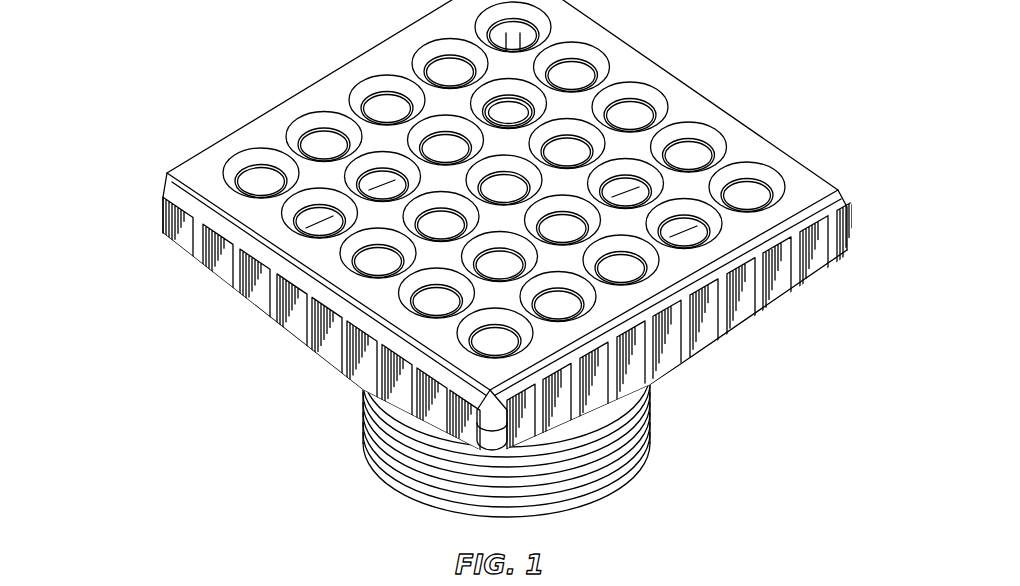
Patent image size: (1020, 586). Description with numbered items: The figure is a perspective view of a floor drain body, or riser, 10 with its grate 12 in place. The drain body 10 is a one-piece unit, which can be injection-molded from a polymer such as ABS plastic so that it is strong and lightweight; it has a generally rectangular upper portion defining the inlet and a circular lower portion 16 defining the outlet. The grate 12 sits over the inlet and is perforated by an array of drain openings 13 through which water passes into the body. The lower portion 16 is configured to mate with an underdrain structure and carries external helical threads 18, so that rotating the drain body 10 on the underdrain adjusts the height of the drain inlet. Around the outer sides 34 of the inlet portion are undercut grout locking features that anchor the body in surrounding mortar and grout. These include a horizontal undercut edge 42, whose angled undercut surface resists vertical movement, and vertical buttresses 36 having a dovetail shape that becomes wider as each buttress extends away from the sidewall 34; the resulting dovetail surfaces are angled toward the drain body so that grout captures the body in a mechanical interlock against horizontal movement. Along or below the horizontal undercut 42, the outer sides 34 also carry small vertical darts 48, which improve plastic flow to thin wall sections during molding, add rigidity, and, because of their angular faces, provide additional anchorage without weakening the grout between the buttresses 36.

The drain body 10 is at (466, 258).
The grate 12 is at (680, 97).
The drain openings 13 is at (372, 92).
The lower portion 16 is at (488, 445).
The external helical threads 18 is at (648, 443).
The outer sides 34 is at (707, 338).
The vertical buttresses 36 is at (728, 318).
The horizontal undercut edge 42 is at (800, 264).
The vertical darts 48 is at (292, 295).